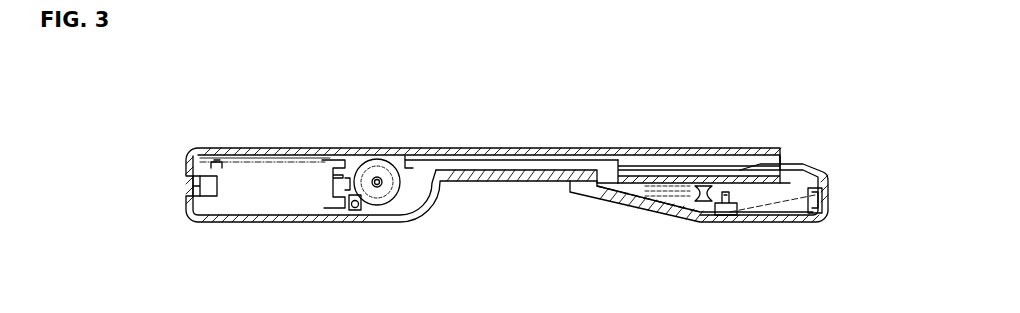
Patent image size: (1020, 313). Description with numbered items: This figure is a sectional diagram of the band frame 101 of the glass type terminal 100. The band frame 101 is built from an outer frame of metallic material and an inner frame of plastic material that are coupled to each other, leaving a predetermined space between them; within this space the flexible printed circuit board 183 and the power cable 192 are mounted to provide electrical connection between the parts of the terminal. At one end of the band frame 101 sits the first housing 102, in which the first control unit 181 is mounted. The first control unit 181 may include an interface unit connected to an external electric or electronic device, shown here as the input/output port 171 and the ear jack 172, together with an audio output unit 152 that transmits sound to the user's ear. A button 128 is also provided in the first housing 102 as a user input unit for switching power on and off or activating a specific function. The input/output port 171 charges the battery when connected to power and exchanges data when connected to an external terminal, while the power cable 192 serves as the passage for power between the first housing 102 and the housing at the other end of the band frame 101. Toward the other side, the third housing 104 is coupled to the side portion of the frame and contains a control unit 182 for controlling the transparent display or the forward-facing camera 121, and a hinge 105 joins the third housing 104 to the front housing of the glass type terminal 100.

The glass type terminal 100 is at (750, 100).
The band frame 101 is at (654, 147).
The first housing 102 is at (262, 224).
The third housing 104 is at (655, 215).
The hinge 105 is at (726, 216).
The camera 121 is at (804, 200).
The button 128 is at (218, 158).
The audio output unit 152 is at (388, 203).
The input/output port 171 is at (204, 198).
The ear jack 172 is at (338, 176).
The first control unit 181 is at (258, 157).
The control unit 182 is at (630, 205).
The flexible printed circuit board 183 is at (512, 158).
The power cable 192 is at (727, 157).